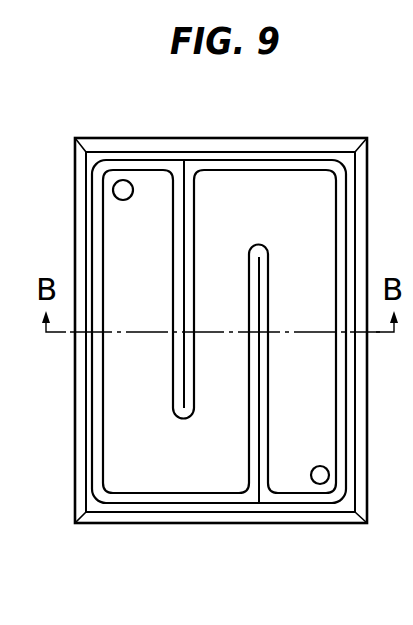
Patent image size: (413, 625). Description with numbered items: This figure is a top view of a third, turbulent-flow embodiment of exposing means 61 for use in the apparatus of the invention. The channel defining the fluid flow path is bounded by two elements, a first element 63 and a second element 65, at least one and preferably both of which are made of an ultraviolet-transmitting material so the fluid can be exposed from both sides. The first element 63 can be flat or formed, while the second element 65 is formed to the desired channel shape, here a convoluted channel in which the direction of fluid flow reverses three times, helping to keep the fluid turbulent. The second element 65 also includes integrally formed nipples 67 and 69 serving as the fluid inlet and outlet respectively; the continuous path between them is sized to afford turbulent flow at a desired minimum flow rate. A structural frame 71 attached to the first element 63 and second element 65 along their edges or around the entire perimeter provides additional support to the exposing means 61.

The exposing means 61 is at (58, 458).
The first element 63 is at (147, 474).
The second element 65 is at (288, 470).
The nipple 67 is at (114, 196).
The nipple 69 is at (333, 475).
The structural frame 71 is at (290, 134).